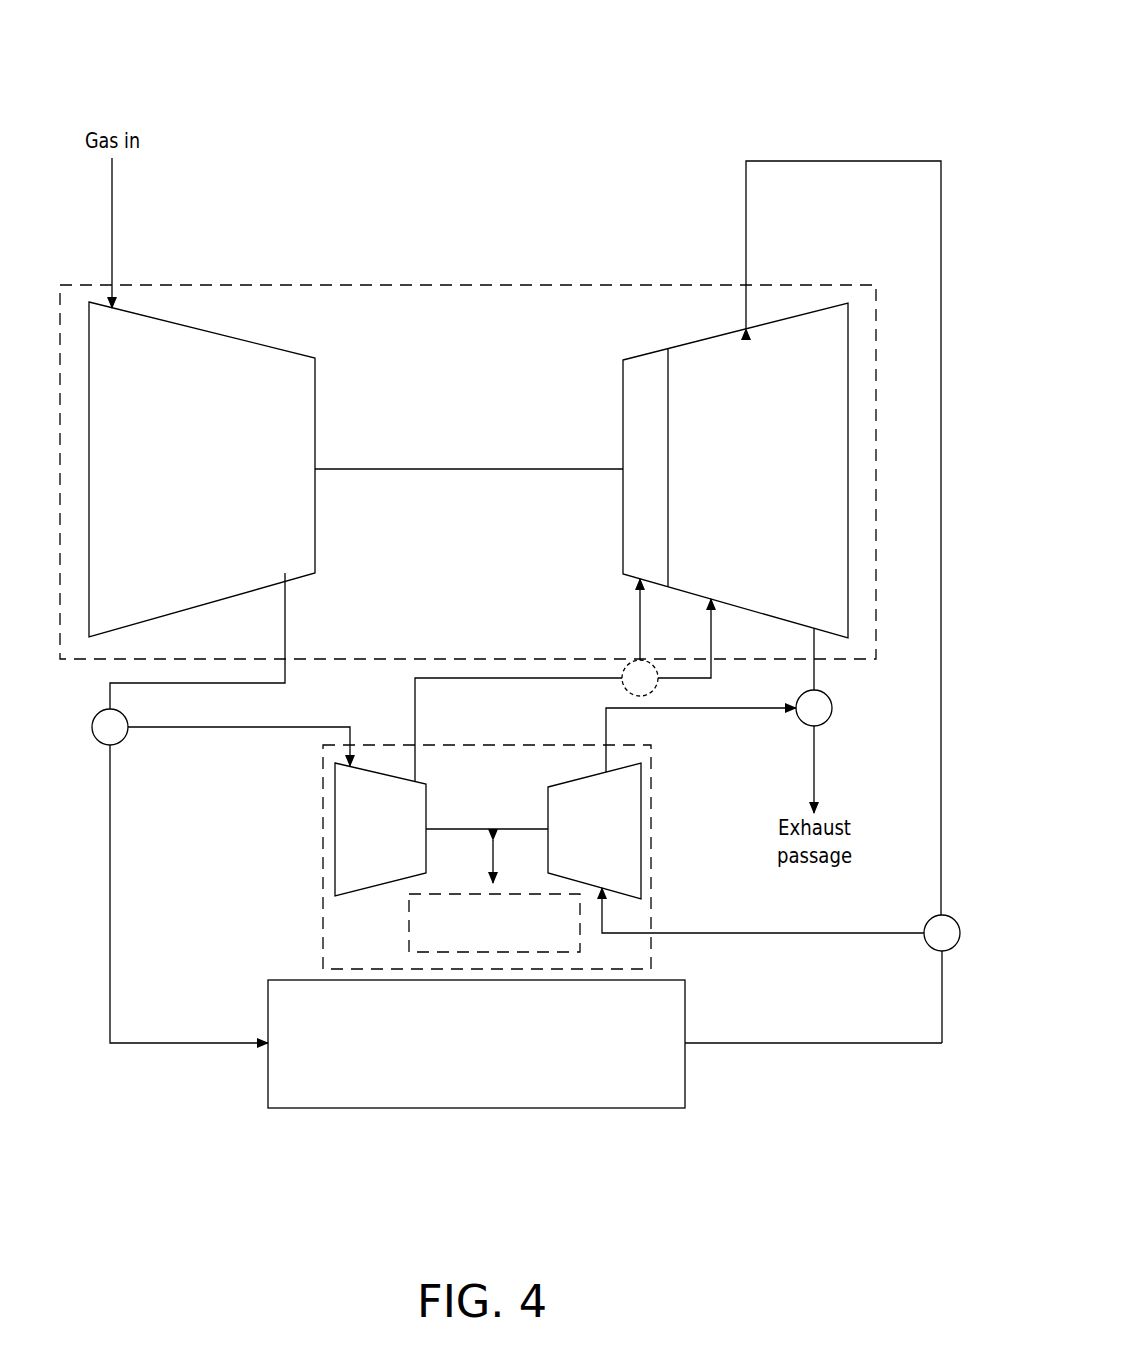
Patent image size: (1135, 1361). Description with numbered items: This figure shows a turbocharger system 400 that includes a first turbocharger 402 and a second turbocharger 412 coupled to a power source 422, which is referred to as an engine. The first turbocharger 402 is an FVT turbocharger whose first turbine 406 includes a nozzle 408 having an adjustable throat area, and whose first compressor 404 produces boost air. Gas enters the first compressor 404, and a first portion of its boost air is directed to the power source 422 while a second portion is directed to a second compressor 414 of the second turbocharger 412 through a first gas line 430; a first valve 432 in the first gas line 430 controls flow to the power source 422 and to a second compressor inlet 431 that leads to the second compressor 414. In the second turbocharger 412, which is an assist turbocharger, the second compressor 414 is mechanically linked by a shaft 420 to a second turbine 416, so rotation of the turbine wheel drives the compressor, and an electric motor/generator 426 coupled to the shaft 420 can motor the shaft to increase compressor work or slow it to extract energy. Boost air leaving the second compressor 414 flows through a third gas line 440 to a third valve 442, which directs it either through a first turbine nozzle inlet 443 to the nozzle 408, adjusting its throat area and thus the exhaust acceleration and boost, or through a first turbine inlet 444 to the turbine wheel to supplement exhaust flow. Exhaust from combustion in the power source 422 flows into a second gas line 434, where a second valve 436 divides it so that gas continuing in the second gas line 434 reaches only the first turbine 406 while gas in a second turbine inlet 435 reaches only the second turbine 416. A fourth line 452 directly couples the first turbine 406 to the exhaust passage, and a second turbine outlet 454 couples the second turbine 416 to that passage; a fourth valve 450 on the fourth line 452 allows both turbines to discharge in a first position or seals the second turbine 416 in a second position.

The turbocharger system 400 is at (852, 36).
The first turbocharger 402 is at (474, 285).
The first compressor 404 is at (272, 482).
The first turbine 406 is at (808, 482).
The nozzle 408 is at (661, 482).
The second turbocharger 412 is at (323, 845).
The second compressor 414 is at (397, 844).
The second turbine 416 is at (611, 844).
The shaft 420 is at (450, 829).
The power source 422 is at (496, 1059).
The electric motor/generator 426 is at (511, 947).
The first gas line 430 is at (285, 632).
The second compressor inlet 431 is at (283, 727).
The first valve 432 is at (94, 717).
The second gas line 434 is at (872, 1043).
The second turbine inlet 435 is at (790, 933).
The second valve 436 is at (926, 921).
The third gas line 440 is at (550, 680).
The third valve 442 is at (635, 660).
The first turbine nozzle inlet 443 is at (638, 630).
The first turbine inlet 444 is at (711, 656).
The fourth valve 450 is at (832, 708).
The fourth line 452 is at (814, 768).
The second turbine outlet 454 is at (762, 712).